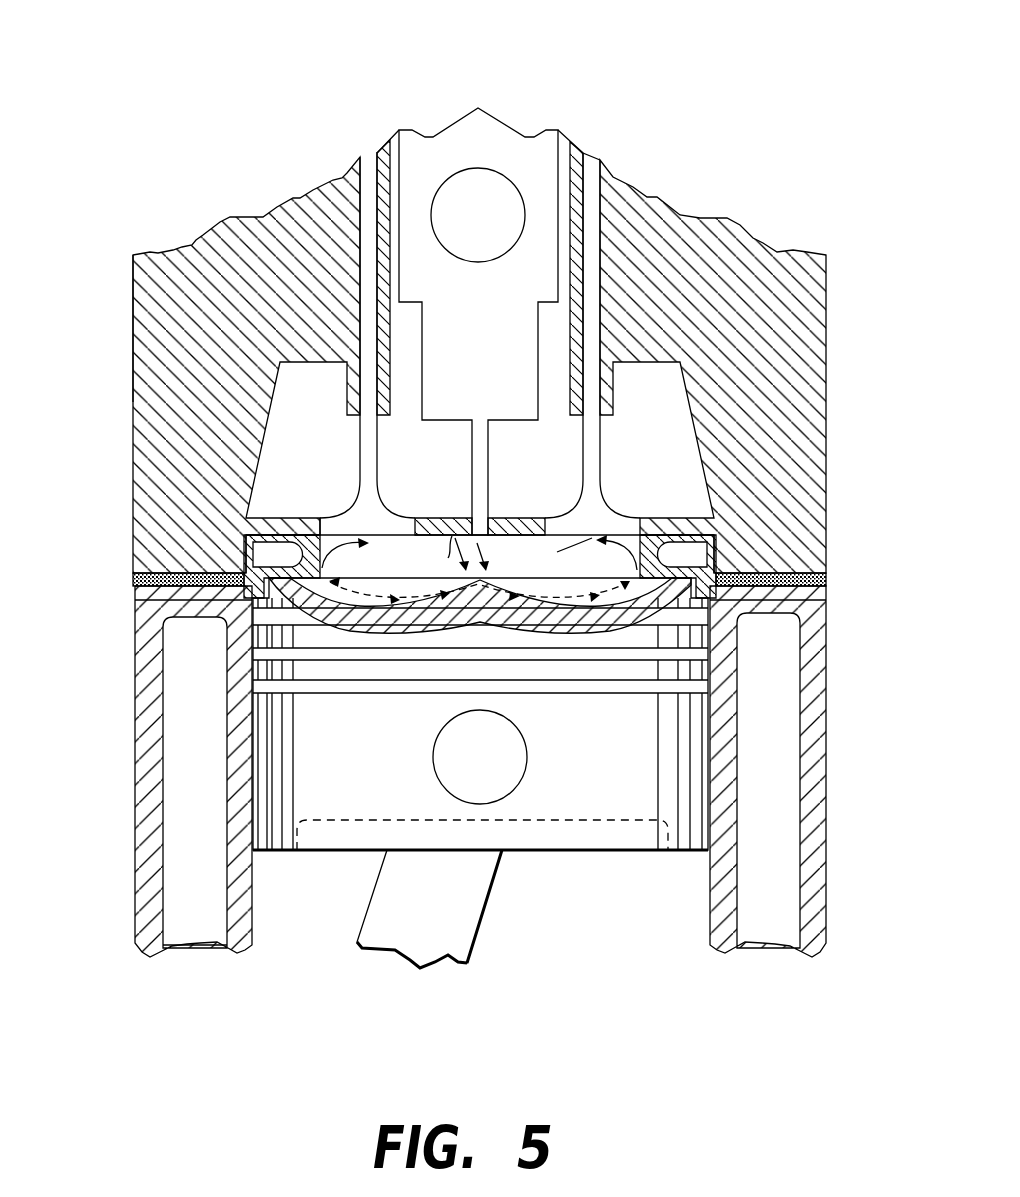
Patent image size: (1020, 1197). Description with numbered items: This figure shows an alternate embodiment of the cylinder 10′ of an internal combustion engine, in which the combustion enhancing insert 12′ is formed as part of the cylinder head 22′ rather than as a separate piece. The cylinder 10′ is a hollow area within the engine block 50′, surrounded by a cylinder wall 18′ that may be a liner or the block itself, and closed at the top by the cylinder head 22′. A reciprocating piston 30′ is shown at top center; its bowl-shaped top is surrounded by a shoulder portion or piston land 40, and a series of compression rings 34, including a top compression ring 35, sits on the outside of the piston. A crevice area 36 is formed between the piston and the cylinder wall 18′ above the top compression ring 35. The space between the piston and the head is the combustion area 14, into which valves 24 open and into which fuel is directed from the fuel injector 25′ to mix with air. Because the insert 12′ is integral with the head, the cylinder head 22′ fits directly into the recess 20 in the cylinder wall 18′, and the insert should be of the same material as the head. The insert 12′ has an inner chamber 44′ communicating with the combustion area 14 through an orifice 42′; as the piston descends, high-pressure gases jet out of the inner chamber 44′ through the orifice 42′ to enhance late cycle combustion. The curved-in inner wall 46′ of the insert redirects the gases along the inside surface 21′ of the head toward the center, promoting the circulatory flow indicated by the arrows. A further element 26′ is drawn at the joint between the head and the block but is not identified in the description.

The cylinder 10′ is at (407, 96).
The combustion enhancing insert 12′ is at (240, 532).
The combustion area 14 is at (598, 533).
The cylinder wall 18′ is at (203, 943).
The recess 20 is at (253, 563).
The inside surface of cylinder head 21′ is at (457, 558).
The cylinder head 22′ is at (133, 402).
The valve 24 is at (360, 455).
The fuel injector 25′ is at (470, 495).
The head gasket 26′ is at (135, 578).
The piston 30′ is at (560, 852).
The compression rings 34 is at (710, 692).
The top compression ring 35 is at (710, 609).
The crevice area 36 is at (240, 607).
The piston land 40 is at (500, 577).
The orifice 42′ is at (320, 537).
The inner chamber 44′ is at (300, 518).
The inner wall 46′ is at (717, 558).
The engine block 50′ is at (135, 825).